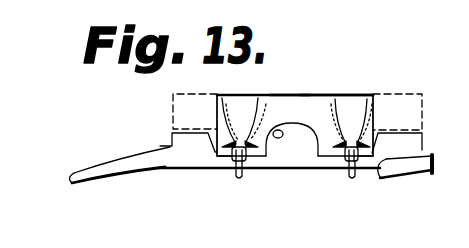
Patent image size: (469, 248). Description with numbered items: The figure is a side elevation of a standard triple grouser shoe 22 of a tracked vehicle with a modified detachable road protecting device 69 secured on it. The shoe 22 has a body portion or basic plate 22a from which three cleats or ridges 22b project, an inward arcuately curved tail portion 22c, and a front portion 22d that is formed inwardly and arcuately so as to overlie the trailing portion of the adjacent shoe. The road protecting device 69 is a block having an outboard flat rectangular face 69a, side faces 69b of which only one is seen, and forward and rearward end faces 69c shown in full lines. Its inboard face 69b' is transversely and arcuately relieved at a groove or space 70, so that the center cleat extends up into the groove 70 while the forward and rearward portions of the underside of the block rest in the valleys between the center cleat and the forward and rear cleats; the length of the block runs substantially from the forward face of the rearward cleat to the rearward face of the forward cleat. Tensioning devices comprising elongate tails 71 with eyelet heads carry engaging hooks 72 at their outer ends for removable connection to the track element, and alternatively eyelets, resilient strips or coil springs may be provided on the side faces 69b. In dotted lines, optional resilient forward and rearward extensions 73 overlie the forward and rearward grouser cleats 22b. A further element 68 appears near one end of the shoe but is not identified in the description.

The standard triple grouser shoe 22 is at (209, 177).
The body portion or basic plate 22a is at (256, 160).
The cleats or ridges 22b is at (160, 146).
The inward arcuately curved tail portion 22c is at (83, 180).
The inwardly and arcuately formed front portion 22d is at (377, 180).
The fastener screw 68 is at (450, 167).
The road protecting device 69 is at (300, 67).
The outboard flat rectangular face 69a is at (320, 94).
The side faces 69b is at (290, 64).
The inboard face 69b' is at (287, 196).
The forward and rearward end faces 69c is at (212, 95).
The arcuate relieved groove or space 70 is at (278, 130).
The elongate tails 71 is at (249, 96).
The engaging hooks 72 is at (239, 180).
The forward and rearward extensions 73 is at (172, 115).